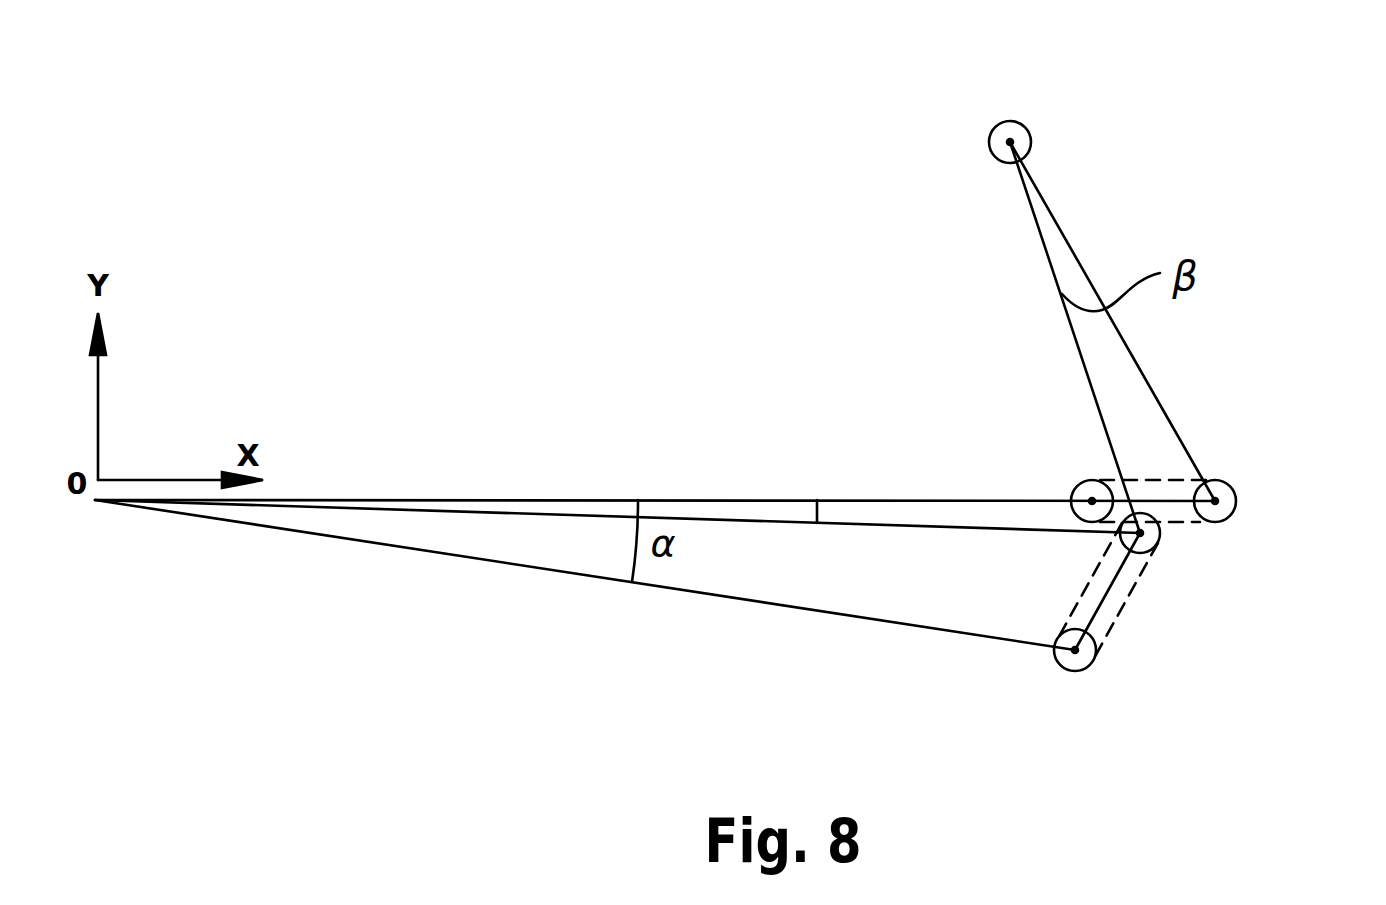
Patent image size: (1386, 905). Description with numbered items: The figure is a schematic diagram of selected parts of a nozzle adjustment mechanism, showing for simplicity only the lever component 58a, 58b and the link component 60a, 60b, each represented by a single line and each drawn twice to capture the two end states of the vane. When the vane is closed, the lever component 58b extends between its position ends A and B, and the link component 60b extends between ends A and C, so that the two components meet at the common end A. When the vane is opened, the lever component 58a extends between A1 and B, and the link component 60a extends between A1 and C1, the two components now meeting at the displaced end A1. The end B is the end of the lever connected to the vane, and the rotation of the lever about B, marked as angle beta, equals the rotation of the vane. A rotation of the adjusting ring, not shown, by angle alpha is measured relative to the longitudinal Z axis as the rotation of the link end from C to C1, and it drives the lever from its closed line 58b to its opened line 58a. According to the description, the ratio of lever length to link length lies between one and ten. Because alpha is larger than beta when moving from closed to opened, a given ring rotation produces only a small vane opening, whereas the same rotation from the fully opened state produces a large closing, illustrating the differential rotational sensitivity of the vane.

The lever component 58a is at (1072, 334).
The lever component 58b is at (1139, 367).
The link component 60a is at (1107, 603).
The link component 60b is at (1182, 513).
The position end A is at (1221, 490).
The position end A' A1 is at (1153, 550).
The position end B is at (1020, 130).
The position end C is at (1086, 488).
The position end C' C1 is at (1063, 662).